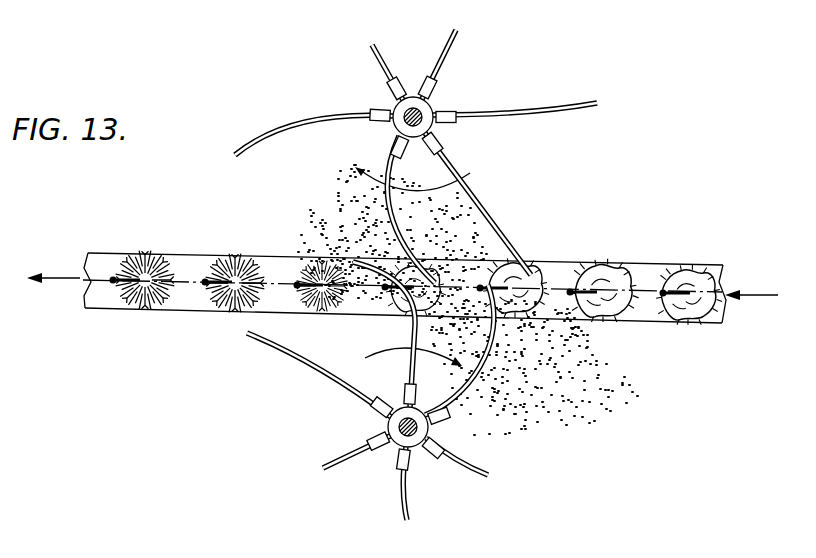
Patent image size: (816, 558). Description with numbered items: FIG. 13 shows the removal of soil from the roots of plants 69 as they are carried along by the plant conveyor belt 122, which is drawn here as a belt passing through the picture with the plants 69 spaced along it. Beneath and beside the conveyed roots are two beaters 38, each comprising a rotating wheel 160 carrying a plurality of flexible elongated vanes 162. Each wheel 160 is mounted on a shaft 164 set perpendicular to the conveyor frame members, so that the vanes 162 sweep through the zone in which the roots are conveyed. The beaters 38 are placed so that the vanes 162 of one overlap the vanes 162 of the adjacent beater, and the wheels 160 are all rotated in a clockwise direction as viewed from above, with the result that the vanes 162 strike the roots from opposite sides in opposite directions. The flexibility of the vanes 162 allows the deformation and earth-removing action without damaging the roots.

The beater 38 is at (466, 50).
The plant seedling 69 is at (205, 281).
The plant conveyor belt 122 is at (108, 252).
The rotating wheel 160 is at (431, 126).
The flexible elongated vane 162 is at (566, 113).
The shaft 164 is at (421, 112).